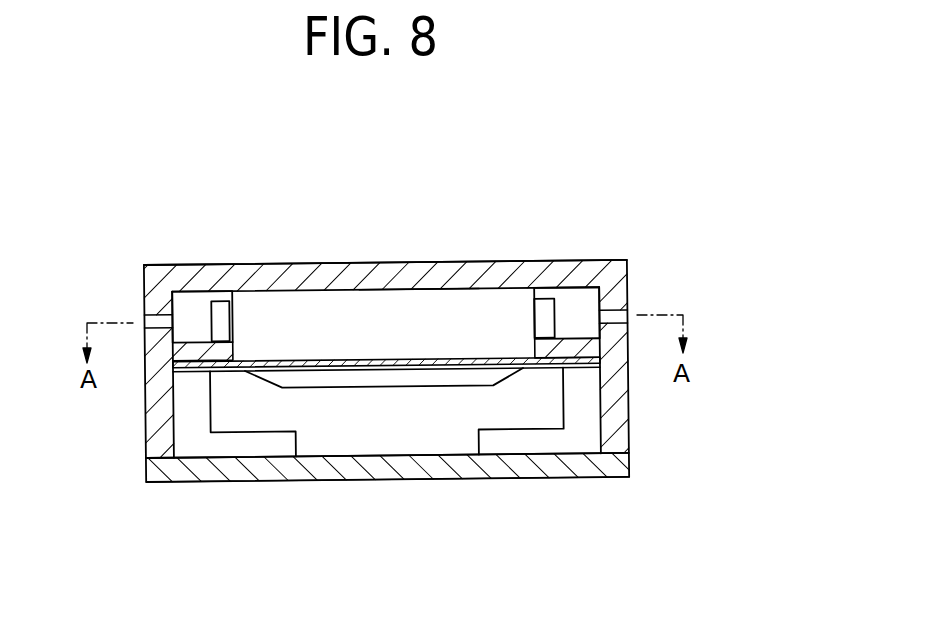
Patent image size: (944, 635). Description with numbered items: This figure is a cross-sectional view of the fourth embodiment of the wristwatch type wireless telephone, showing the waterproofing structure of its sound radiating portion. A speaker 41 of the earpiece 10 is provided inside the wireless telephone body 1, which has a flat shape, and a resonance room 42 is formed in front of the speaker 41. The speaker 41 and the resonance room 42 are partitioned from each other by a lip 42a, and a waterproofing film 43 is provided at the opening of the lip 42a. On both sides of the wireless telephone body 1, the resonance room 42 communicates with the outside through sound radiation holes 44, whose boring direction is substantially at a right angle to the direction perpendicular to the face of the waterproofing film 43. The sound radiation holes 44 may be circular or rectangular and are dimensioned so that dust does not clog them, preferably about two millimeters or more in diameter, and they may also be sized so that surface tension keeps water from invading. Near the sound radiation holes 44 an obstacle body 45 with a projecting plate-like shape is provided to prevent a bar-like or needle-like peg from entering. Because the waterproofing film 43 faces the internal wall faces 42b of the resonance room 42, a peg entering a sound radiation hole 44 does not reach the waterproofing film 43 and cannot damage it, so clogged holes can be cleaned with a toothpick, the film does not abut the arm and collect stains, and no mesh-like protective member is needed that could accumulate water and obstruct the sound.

The wireless telephone body 1 is at (150, 400).
The earpiece 10 is at (526, 503).
The speaker 41 is at (380, 443).
The resonance room 42 is at (287, 305).
The lip 42a is at (188, 340).
The internal wall faces 42b is at (418, 295).
The waterproofing film 43 is at (343, 360).
The sound radiation holes 44 is at (153, 320).
The obstacle body 45 is at (218, 305).